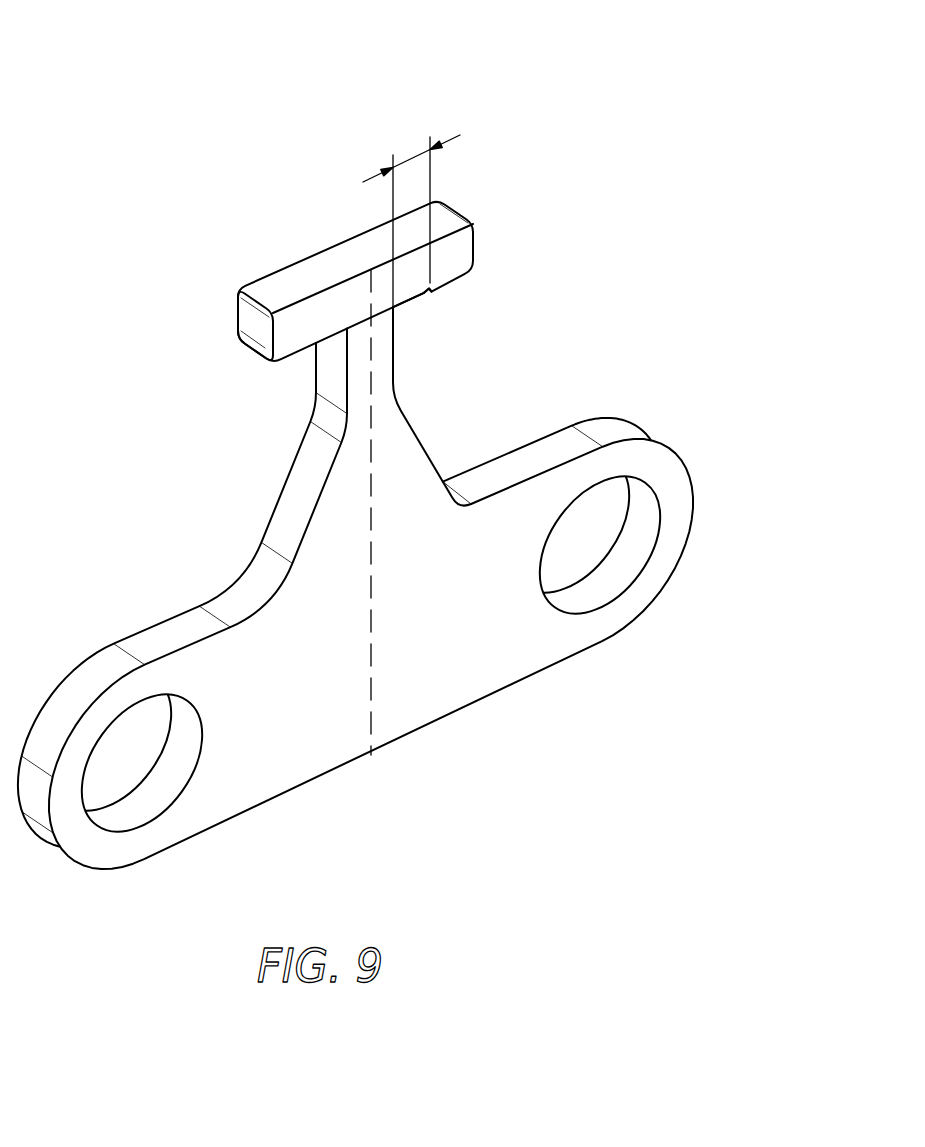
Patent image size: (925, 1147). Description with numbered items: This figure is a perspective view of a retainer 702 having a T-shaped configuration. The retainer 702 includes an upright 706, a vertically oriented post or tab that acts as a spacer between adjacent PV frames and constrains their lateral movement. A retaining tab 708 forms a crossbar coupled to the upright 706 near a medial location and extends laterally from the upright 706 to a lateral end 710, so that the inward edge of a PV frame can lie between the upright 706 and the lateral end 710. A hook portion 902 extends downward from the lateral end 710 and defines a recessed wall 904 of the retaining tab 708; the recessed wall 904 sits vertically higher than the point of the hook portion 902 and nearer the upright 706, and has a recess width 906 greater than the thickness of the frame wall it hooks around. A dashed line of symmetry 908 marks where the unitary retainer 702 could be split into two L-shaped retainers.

The retainer 702 is at (180, 62).
The upright 706 is at (358, 437).
The retaining tab 708 is at (280, 339).
The lateral end 710 is at (477, 242).
The hook portion 902 is at (432, 293).
The recessed wall 904 is at (410, 297).
The recess width 906 is at (412, 152).
The line of symmetry 908 is at (371, 645).